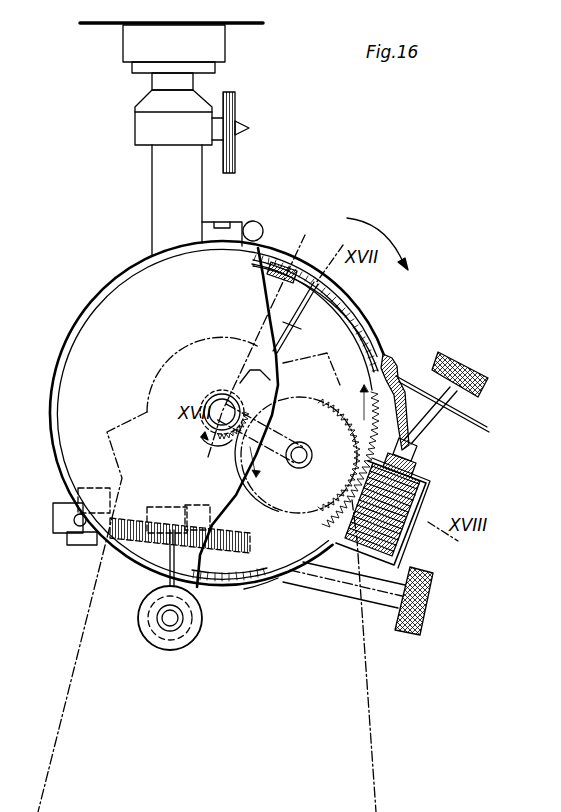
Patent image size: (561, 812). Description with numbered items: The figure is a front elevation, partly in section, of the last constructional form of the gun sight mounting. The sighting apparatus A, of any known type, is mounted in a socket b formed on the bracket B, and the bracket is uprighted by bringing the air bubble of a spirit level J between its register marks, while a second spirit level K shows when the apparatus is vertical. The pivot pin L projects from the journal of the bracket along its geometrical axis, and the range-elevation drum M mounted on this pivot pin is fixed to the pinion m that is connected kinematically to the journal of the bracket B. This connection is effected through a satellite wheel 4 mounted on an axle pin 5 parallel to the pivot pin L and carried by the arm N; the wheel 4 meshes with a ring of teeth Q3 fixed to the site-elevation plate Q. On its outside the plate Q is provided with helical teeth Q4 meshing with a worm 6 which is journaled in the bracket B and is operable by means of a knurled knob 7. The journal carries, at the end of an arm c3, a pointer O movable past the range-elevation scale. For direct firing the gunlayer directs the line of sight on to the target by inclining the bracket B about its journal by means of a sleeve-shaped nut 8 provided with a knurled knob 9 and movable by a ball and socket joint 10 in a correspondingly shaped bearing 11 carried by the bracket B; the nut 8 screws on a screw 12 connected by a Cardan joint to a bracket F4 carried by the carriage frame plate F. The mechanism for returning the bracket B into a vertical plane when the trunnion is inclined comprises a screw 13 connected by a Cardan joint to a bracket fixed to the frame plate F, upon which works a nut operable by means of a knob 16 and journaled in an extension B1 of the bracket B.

The sighting apparatus A is at (140, 126).
The socket b is at (160, 190).
The spirit level K is at (225, 229).
The spirit level J is at (257, 230).
The pointer O is at (301, 274).
The range-elevation drum M is at (353, 328).
The arm c3 is at (302, 317).
The pivot pin L is at (218, 404).
The pinion m is at (210, 448).
The arm N is at (285, 447).
The axle pin 5 is at (308, 456).
The satellite wheel 4 is at (297, 505).
The knurled knob 7 is at (466, 368).
The ring of teeth Q3 is at (405, 440).
The helical teeth Q4 is at (410, 462).
The worm 6 is at (427, 495).
The bracket B is at (398, 547).
The sleeve-shaped nut 8 is at (350, 591).
The knurled knob 9 is at (426, 616).
The extension of the bracket B1 is at (163, 583).
The site-elevation plate Q is at (244, 589).
The knob 16 is at (158, 636).
The screw 13 is at (173, 622).
The screw 12 is at (130, 527).
The bearing 11 is at (183, 512).
The ball and socket joint 10 is at (200, 520).
The frame plate F is at (72, 690).
The bracket F4 is at (55, 520).